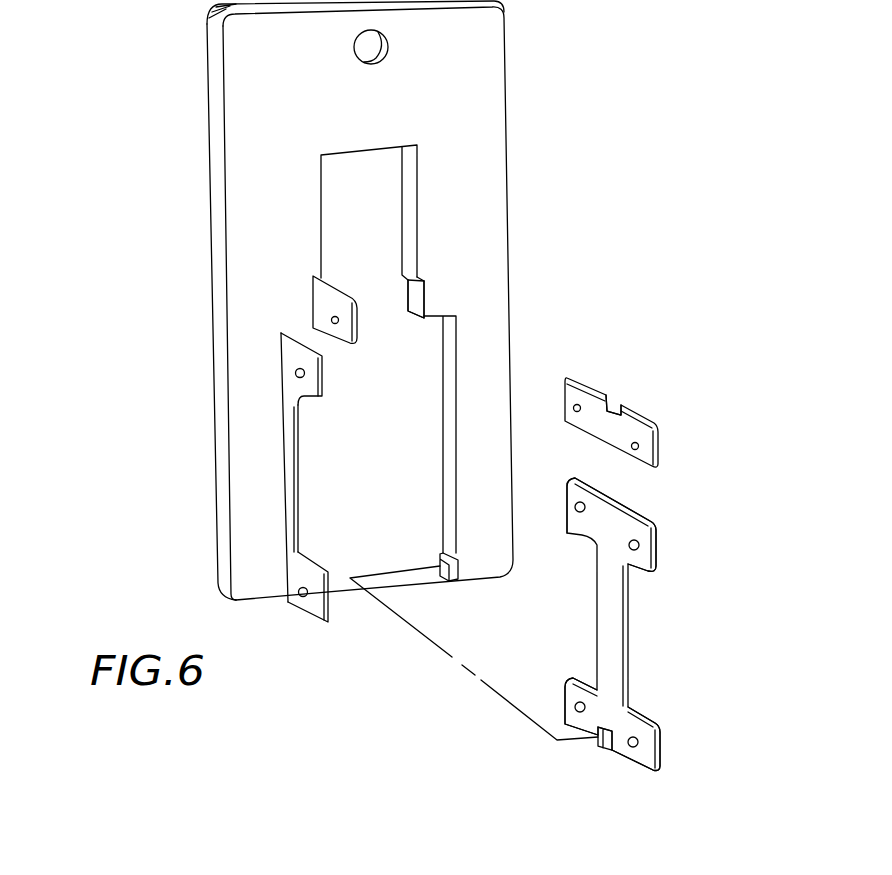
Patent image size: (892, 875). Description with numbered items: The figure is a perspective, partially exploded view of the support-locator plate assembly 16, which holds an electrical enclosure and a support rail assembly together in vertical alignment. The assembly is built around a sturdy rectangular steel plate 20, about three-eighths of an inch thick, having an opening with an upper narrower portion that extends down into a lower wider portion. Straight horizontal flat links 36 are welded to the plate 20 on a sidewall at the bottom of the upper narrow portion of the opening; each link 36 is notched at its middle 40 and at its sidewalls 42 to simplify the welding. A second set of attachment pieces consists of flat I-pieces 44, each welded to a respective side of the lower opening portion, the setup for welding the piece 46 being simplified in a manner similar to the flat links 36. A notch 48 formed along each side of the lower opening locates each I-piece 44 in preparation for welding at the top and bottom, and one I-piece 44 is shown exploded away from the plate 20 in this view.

The support-locator plate assembly 16 is at (512, 184).
The rectangular steel plate 20 is at (490, 68).
The flat link 36 is at (322, 300).
The middle notch 40 is at (618, 402).
The sidewall notch 42 is at (300, 387).
The flat I-piece 44 is at (306, 499).
The attachment piece 46 is at (315, 622).
The notch 48 is at (453, 457).